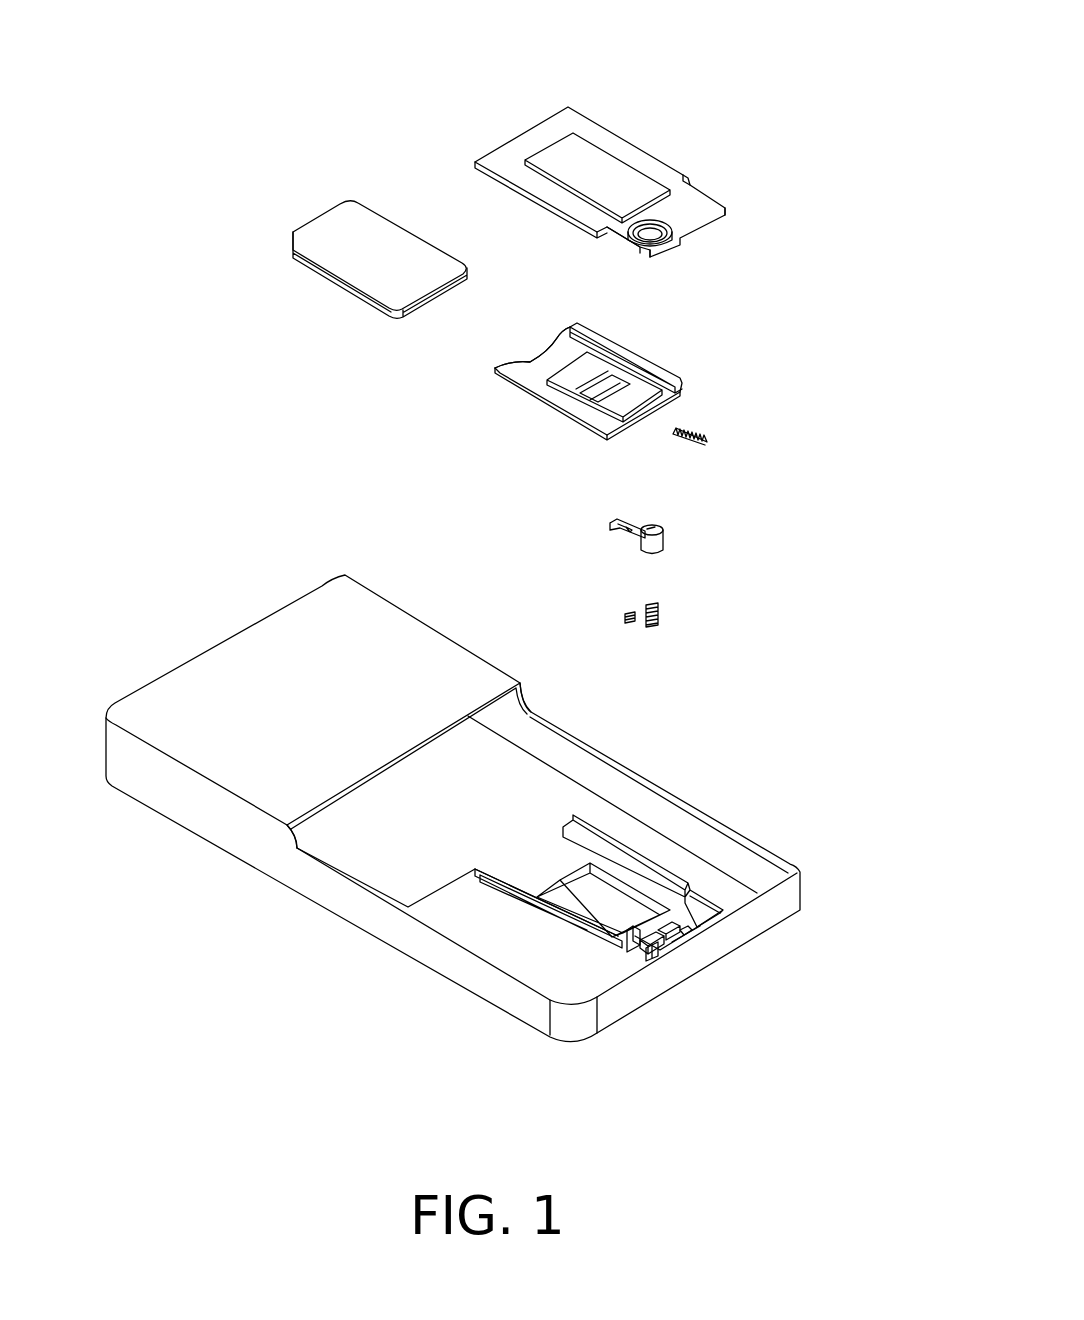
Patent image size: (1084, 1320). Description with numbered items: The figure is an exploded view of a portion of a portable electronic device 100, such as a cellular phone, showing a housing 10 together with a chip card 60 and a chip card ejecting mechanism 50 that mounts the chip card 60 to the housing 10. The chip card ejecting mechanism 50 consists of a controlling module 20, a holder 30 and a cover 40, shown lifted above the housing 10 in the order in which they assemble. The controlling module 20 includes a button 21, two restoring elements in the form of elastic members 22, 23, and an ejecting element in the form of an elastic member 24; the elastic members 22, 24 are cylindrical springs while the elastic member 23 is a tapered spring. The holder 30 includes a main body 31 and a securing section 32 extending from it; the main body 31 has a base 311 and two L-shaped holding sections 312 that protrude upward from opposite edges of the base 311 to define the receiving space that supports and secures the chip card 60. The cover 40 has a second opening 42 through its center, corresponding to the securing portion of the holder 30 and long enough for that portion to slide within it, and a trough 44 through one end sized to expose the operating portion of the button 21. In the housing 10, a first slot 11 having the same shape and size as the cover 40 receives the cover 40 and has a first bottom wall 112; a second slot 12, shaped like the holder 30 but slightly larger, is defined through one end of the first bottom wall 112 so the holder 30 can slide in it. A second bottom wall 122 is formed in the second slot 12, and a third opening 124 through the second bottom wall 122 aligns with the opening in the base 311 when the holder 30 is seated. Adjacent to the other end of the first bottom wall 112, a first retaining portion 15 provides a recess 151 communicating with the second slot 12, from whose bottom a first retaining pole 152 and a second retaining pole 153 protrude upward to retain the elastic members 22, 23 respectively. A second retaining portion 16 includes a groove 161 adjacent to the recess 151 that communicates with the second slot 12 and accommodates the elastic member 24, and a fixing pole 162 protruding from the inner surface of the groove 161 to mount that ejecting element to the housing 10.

The portable electronic device 100 is at (472, 48).
The housing 10 is at (490, 862).
The first slot 11 is at (605, 848).
The second slot 12 is at (547, 865).
The first bottom wall 112 is at (690, 918).
The second bottom wall 122 is at (522, 873).
The third opening 124 is at (563, 897).
The first retaining portion 15 is at (577, 1037).
The recess 151 is at (650, 958).
The first retaining pole 152 is at (628, 952).
The second retaining pole 153 is at (652, 962).
The second retaining portion 16 is at (715, 1014).
The groove 161 is at (664, 945).
The fixing pole 162 is at (682, 943).
The controlling module 20 is at (775, 426).
The button 21 is at (657, 530).
The elastic member 22 is at (657, 627).
The elastic member 23 is at (632, 613).
The elastic member 24 is at (703, 441).
The holder 30 is at (598, 360).
The main body 31 is at (616, 337).
The base 311 is at (577, 343).
The holding sections 312 is at (640, 362).
The securing section 32 is at (645, 405).
The cover 40 is at (632, 191).
The second opening 42 is at (565, 163).
The trough 44 is at (653, 242).
The chip card ejecting mechanism 50 is at (815, 125).
The chip card 60 is at (320, 232).